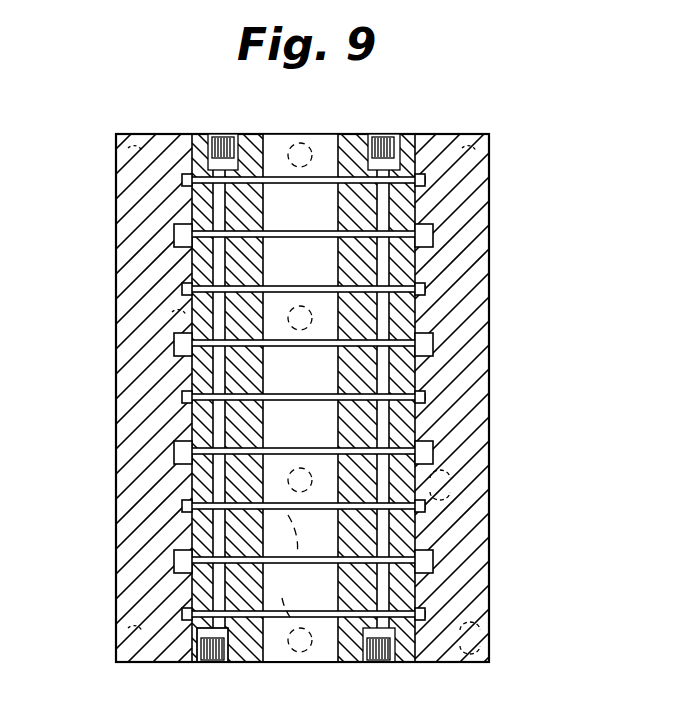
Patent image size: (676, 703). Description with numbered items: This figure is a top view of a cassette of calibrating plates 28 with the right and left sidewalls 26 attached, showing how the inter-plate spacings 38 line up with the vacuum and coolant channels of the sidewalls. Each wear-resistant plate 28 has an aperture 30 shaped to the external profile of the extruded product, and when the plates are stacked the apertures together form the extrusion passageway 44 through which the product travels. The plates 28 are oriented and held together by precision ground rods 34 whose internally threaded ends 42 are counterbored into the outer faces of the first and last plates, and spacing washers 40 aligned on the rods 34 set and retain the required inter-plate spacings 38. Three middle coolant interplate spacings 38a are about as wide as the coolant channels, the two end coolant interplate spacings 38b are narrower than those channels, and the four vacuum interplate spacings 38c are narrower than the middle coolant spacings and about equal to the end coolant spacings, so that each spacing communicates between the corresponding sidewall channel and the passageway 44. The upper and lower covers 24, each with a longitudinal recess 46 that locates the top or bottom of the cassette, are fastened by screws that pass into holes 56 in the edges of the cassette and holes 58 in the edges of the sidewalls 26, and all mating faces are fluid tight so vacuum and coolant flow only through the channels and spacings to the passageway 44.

The upper and lower covers 24 is at (358, 133).
The right and left sidewalls 26 is at (128, 240).
The calibrating plates 28 is at (432, 447).
The aperture 30 is at (313, 663).
The precision ground rods 34 is at (135, 204).
The inter-plate spacings 38 is at (233, 660).
The middle coolant interplate spacings 38a is at (180, 293).
The end coolant interplate spacings 38b is at (253, 133).
The vacuum interplate spacings 38c is at (428, 330).
The spacing washers 40 is at (207, 617).
The internally threaded ends 42 is at (176, 662).
The extrusion passageway 44 is at (330, 147).
The longitudinal recess 46 is at (408, 134).
The holes in the edges of the cassette 56 is at (289, 566).
The holes in the edges of the sidewalls 58 is at (440, 485).